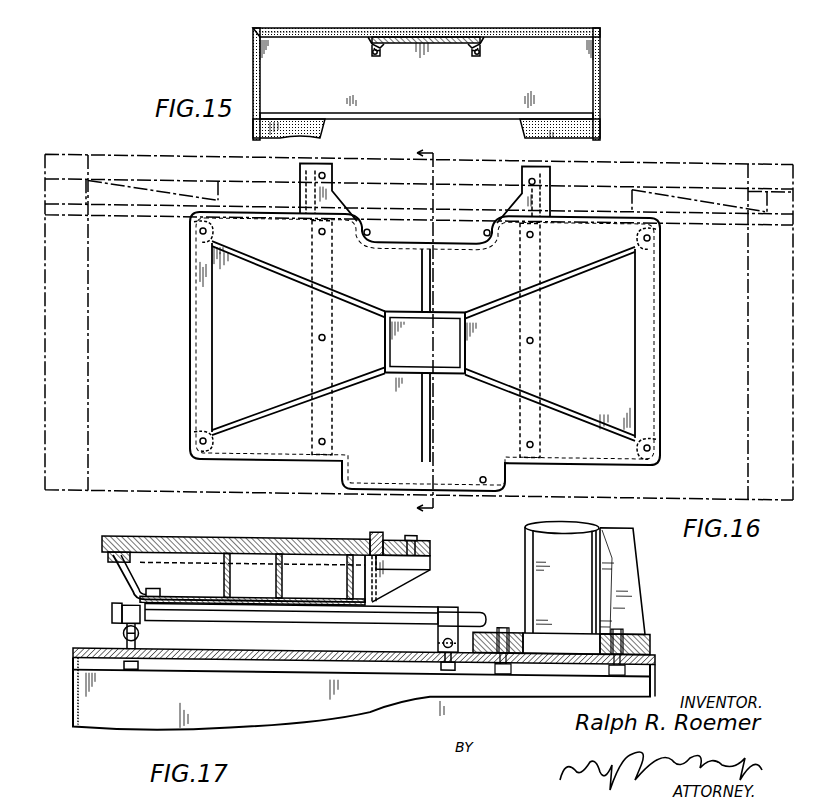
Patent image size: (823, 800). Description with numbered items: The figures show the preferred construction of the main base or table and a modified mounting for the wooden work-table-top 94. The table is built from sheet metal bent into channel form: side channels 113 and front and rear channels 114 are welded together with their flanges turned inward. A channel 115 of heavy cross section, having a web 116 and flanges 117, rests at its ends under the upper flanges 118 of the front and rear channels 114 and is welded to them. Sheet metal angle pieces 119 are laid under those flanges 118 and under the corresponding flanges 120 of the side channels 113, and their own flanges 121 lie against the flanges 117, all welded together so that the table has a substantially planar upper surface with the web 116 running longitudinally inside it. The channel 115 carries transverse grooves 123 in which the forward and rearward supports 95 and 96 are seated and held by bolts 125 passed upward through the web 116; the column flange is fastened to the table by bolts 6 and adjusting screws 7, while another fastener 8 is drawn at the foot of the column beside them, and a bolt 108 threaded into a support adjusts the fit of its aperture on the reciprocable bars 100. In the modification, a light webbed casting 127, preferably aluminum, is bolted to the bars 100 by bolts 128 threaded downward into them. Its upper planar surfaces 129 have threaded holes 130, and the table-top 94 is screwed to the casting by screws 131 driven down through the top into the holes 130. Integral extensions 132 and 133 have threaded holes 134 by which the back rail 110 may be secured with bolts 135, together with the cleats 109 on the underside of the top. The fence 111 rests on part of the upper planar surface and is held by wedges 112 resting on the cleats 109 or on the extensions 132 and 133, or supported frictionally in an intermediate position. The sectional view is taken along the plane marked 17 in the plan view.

In FIG. 15, the side channels 113 is at (253, 77).
In FIG. 15, the front and rear channels 114 is at (338, 113).
In FIG. 15, the channel of heavy cross section 115 is at (418, 46).
In FIG. 15, the web 116 is at (455, 42).
In FIG. 17, the web 116 is at (236, 654).
In FIG. 15, the flanges 117 is at (380, 58).
In FIG. 15, the upper flanges 118 is at (521, 30).
In FIG. 15, the sheet metal angle pieces 119 is at (314, 37).
In FIG. 15, the flanges 120 is at (260, 30).
In FIG. 15, the flanges 121 is at (370, 44).
In FIG. 17, the grooves 123 is at (438, 651).
In FIG. 17, the bolts 125 is at (131, 672).
In FIG. 16, the casting 127 is at (180, 399).
In FIG. 17, the casting 127 is at (125, 578).
In FIG. 17, the bolts 128 is at (152, 596).
In FIG. 16, the planar surfaces 129 is at (400, 243).
In FIG. 17, the planar surfaces 129 is at (132, 542).
In FIG. 16, the threaded holes 130 is at (487, 236).
In FIG. 17, the screws 131 is at (124, 534).
In FIG. 16, the extension 132 is at (333, 177).
In FIG. 17, the extension 132 is at (430, 565).
In FIG. 16, the extension 133 is at (550, 179).
In FIG. 16, the threaded holes 134 is at (325, 175).
In FIG. 17, the bolts 135 is at (412, 537).
In FIG. 16, the cleats 109 is at (90, 442).
In FIG. 16, the back-strip 110 is at (690, 162).
In FIG. 17, the back-strip 110 is at (430, 549).
In FIG. 16, the fence 111 is at (706, 226).
In FIG. 17, the fence 111 is at (376, 532).
In FIG. 16, the wedges 112 is at (142, 207).
In FIG. 17, the wedges 112 is at (392, 544).
In FIG. 17, the bolt 108 is at (124, 636).
In FIG. 17, the bars 100 is at (408, 599).
In FIG. 17, the rearward support 96 is at (472, 607).
In FIG. 17, the forward support 95 is at (124, 608).
In FIG. 16, the work-table-top 94 is at (668, 494).
In FIG. 17, the work-table-top 94 is at (210, 540).
In FIG. 17, the adjusting screws 7 is at (503, 629).
In FIG. 17, the bolts 6 is at (502, 672).
In FIG. 17, the bolt 8 is at (616, 672).
In FIG. 16, the section line 17- 17 is at (428, 332).